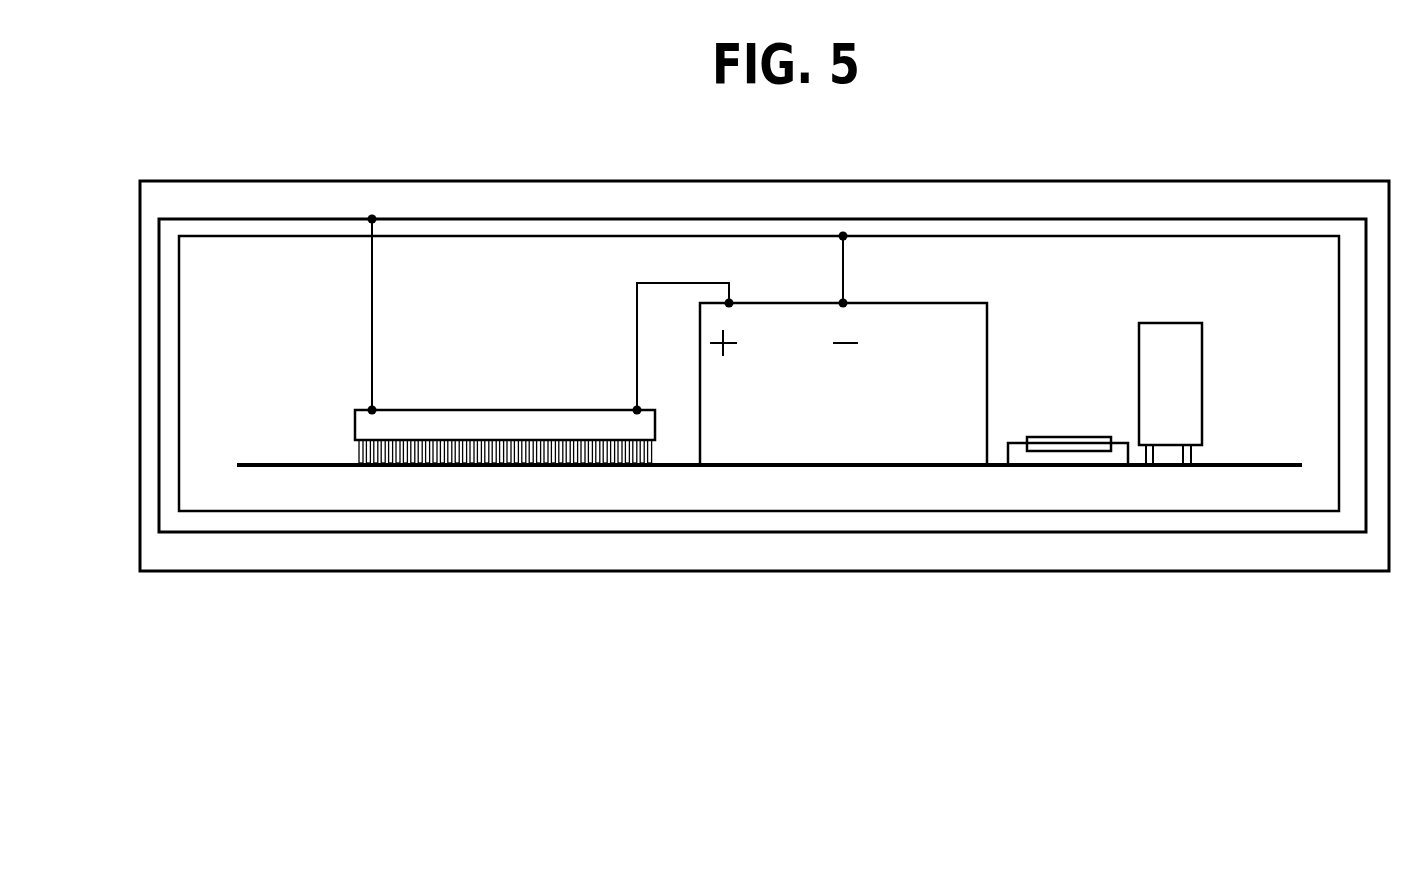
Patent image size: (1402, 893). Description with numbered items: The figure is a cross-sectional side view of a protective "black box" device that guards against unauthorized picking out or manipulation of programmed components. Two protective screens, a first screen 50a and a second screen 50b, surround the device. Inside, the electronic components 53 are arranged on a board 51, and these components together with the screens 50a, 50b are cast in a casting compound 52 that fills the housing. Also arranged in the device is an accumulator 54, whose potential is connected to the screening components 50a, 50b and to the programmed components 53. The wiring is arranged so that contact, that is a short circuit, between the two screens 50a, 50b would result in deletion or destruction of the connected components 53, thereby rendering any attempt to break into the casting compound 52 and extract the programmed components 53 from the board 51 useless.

The first screen 50a is at (288, 219).
The second screen 50b is at (1253, 236).
The board 51 is at (1248, 467).
The casting compound 52 is at (270, 398).
The electronic components 53 is at (1170, 433).
The accumulator 54 is at (903, 303).